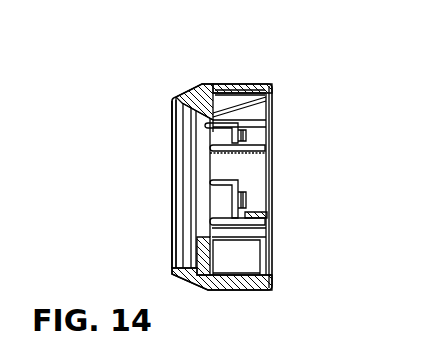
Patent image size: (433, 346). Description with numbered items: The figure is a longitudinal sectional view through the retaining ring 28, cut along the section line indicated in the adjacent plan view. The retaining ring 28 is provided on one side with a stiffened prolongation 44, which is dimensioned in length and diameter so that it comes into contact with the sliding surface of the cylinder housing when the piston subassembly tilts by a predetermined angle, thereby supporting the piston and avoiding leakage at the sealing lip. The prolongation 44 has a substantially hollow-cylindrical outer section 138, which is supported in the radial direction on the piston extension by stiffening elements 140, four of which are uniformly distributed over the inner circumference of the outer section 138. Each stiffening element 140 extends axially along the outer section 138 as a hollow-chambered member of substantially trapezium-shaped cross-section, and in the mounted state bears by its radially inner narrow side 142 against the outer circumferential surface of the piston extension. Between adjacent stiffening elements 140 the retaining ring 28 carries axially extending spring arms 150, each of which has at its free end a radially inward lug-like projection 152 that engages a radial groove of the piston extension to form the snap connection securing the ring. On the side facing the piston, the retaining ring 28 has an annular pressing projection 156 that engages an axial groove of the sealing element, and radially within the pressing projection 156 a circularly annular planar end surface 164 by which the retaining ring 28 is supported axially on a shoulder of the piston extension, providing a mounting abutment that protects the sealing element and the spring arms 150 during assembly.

The retaining ring 28 is at (250, 80).
The stiffened prolongation 44 is at (270, 81).
The spring arm 150 is at (215, 81).
The annular pressing projection 156 is at (173, 96).
The circularly annular planar end surface 164 is at (218, 135).
The stiffening element 140 is at (267, 232).
The radially inner narrow side 142 is at (231, 237).
The lug-like projection 152 is at (237, 186).
The hollow-cylindrical outer section 138 is at (275, 286).